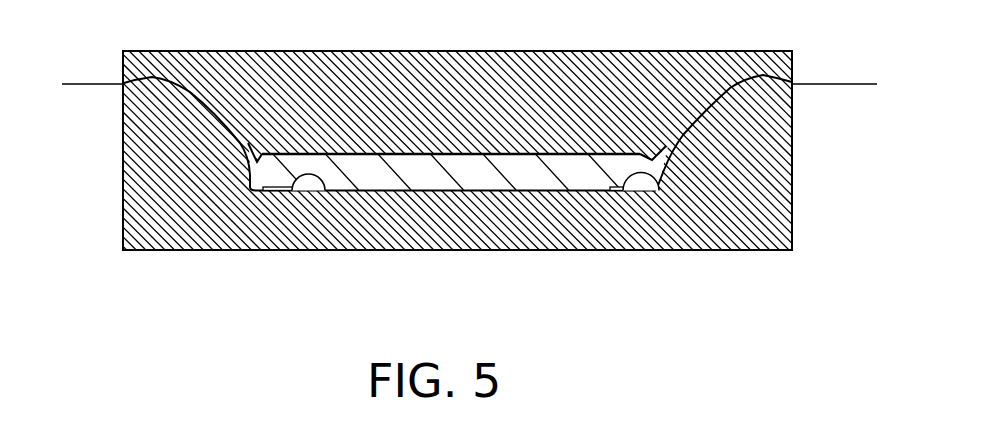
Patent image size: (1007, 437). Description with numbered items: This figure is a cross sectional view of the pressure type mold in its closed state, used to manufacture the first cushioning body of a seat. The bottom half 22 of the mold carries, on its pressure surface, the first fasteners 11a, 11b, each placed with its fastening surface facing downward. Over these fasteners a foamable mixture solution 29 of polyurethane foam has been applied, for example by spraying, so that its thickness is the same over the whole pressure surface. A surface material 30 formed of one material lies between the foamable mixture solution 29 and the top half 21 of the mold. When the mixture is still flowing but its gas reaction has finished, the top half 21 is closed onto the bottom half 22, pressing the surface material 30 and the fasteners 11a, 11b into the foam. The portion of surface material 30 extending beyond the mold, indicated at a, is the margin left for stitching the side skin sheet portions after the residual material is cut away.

The top half of the mold 21 is at (363, 72).
The bottom half of the mold 22 is at (440, 230).
The foamable mixture solution 29 is at (510, 176).
The first fastener 11a is at (659, 190).
The first fastener 11b is at (325, 190).
The surface material 30 is at (100, 86).
The margin for stitching a is at (805, 73).